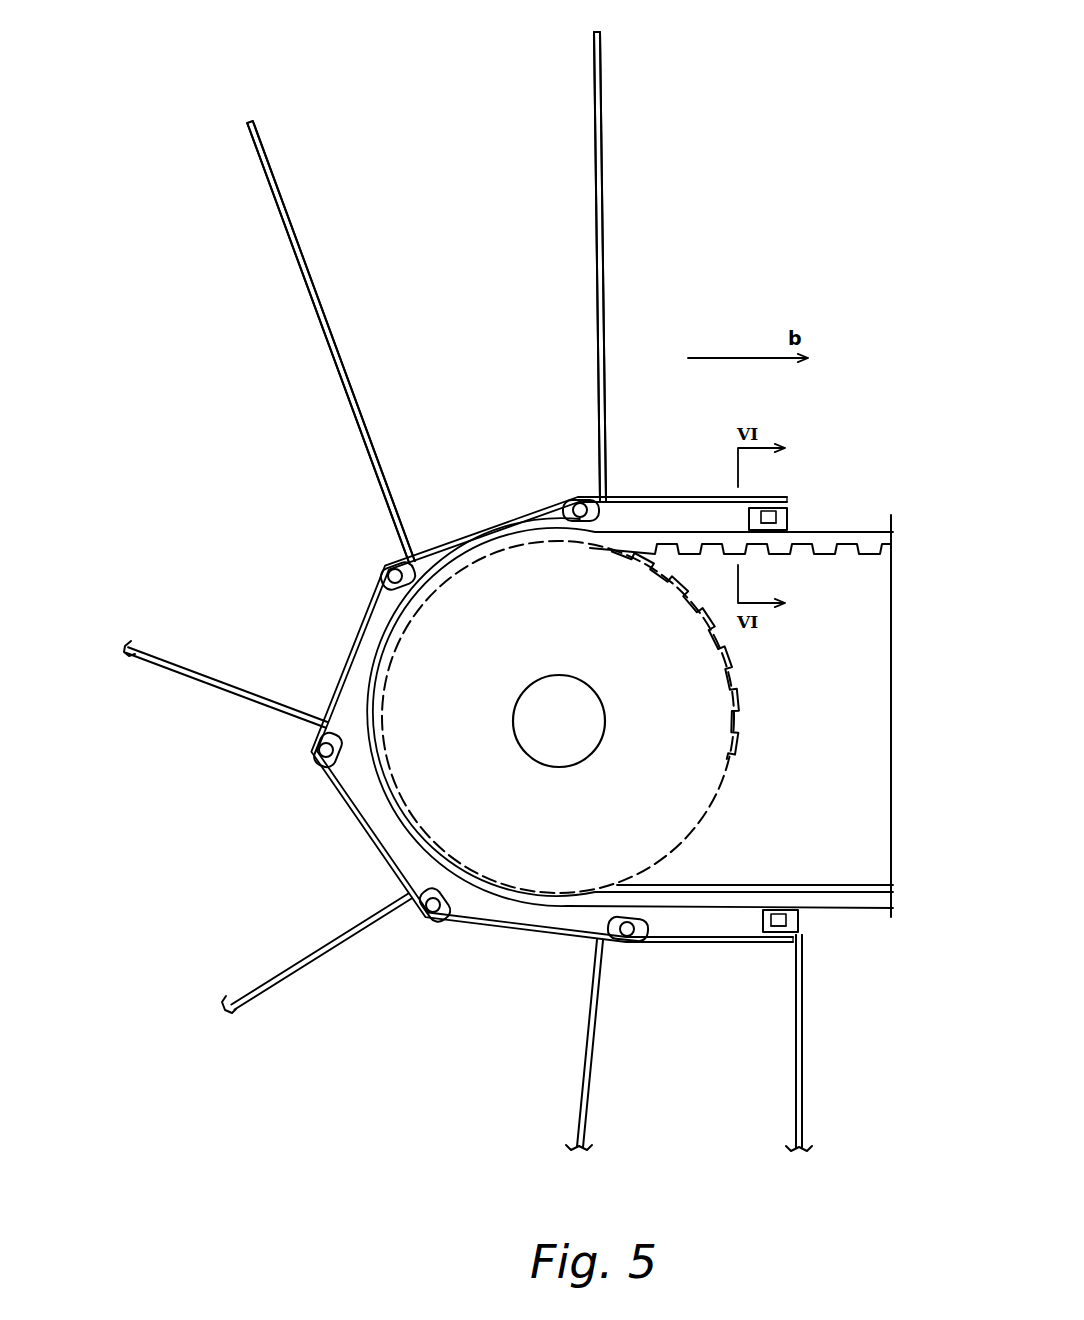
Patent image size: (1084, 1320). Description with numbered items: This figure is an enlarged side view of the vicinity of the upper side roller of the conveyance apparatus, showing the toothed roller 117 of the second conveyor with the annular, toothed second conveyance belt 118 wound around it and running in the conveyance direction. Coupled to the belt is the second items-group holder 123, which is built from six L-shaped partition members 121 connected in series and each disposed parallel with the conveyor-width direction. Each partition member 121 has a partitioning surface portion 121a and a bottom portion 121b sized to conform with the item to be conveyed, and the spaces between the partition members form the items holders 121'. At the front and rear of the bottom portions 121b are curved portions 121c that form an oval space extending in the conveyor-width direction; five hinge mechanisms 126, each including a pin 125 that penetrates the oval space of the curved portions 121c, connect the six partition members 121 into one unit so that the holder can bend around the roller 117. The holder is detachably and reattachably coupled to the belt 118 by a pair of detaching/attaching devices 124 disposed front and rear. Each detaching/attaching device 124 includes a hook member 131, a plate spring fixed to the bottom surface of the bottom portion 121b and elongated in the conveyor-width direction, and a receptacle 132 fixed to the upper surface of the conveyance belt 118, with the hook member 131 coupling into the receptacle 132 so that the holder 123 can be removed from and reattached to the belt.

The toothed roller 117 is at (724, 745).
The second conveyance belt 118 is at (833, 550).
The partition member 121 is at (463, 591).
The partitioning surface portion 121a is at (606, 240).
The bottom portion 121b is at (648, 500).
The curved portion 121c is at (600, 515).
The items holder 121' is at (414, 714).
The second items-group holder 123 is at (677, 52).
The detaching/attaching device 124 is at (796, 508).
The pin 125 is at (583, 501).
The hinge mechanism 126 is at (553, 486).
The hook member 131 is at (770, 506).
The receptacle 132 is at (768, 535).